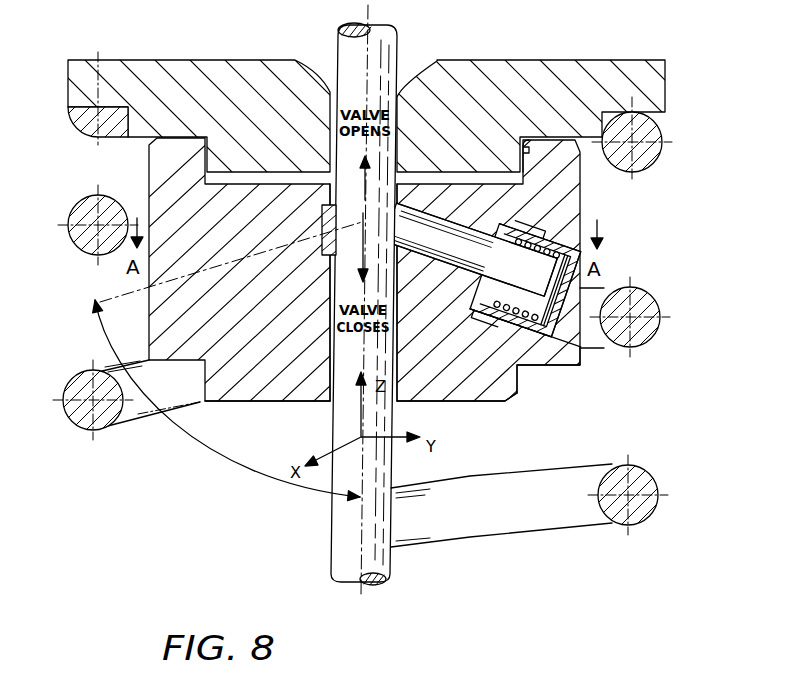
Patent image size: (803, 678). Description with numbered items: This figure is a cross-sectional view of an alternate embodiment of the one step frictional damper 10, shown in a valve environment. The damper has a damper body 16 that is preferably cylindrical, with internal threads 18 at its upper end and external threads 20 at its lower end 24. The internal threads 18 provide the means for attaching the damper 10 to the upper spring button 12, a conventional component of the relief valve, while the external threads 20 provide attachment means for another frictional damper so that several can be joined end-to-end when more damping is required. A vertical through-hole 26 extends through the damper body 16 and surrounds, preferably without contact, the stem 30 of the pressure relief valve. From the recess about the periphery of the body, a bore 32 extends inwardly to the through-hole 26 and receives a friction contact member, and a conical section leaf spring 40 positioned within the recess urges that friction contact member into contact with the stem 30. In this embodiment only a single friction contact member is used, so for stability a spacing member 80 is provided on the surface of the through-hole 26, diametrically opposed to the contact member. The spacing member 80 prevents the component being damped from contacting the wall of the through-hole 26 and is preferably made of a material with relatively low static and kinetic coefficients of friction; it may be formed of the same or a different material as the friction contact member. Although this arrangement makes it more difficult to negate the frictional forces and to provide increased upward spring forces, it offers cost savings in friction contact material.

The one step frictional damper 10 is at (150, 156).
The upper spring button 12 is at (152, 77).
The damper body 16 is at (581, 215).
The internal threads 18 is at (527, 166).
The external threads 20 is at (523, 383).
The lower end 24 is at (480, 403).
The through-hole 26 is at (393, 362).
The stem 30 is at (343, 521).
The bore 32 is at (443, 222).
The conical section leaf spring 40 is at (548, 227).
The spacing member 80 is at (322, 222).